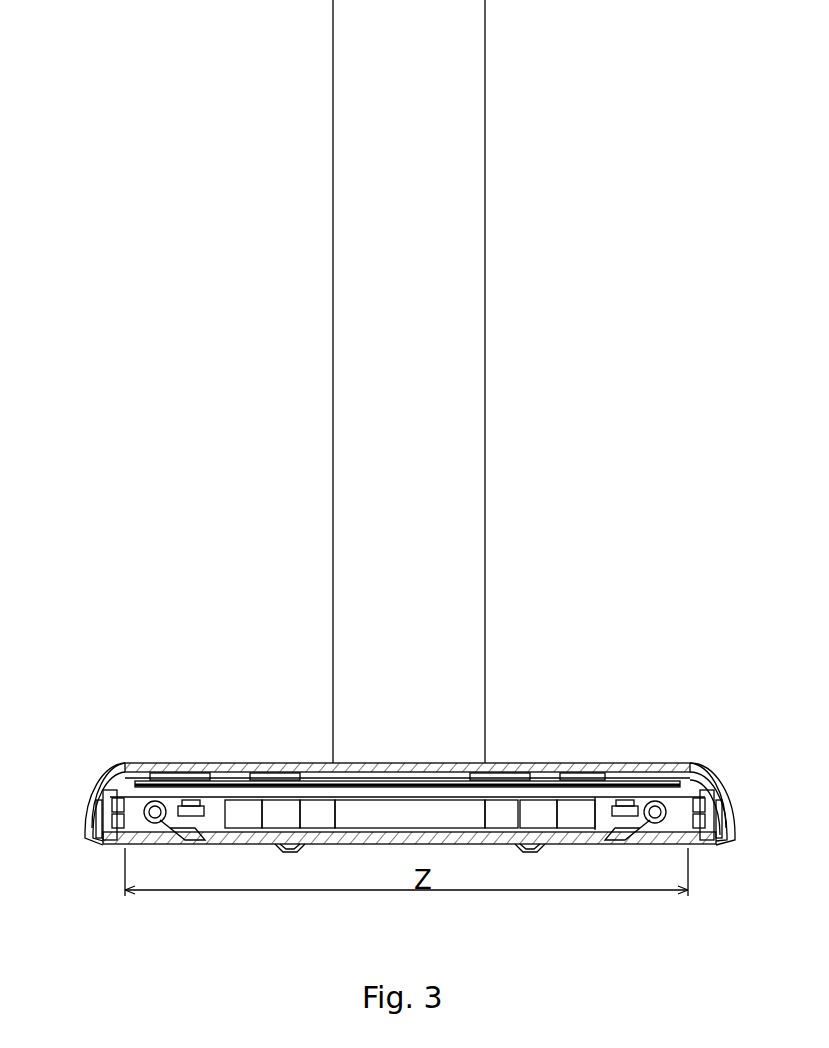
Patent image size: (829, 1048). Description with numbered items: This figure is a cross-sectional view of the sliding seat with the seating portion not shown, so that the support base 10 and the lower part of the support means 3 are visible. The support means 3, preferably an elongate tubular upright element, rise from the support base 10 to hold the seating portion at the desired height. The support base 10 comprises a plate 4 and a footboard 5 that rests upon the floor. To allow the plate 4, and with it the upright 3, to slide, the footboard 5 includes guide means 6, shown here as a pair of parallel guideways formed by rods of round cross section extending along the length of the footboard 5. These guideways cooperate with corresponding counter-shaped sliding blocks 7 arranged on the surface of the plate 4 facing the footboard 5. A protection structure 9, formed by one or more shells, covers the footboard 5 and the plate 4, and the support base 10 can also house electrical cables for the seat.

The support means 3 is at (470, 480).
The plate 4 is at (610, 767).
The footboard 5 is at (703, 840).
The guide means 6 is at (125, 838).
The sliding means 7 is at (143, 810).
The protection structure 9 is at (548, 767).
The support base 10 is at (150, 717).